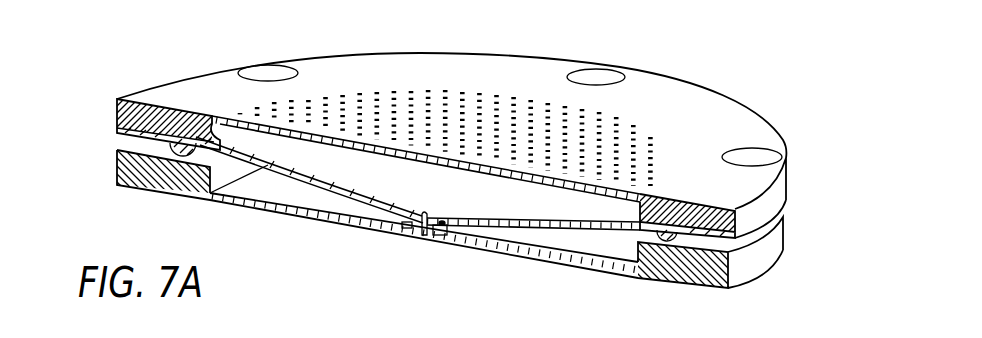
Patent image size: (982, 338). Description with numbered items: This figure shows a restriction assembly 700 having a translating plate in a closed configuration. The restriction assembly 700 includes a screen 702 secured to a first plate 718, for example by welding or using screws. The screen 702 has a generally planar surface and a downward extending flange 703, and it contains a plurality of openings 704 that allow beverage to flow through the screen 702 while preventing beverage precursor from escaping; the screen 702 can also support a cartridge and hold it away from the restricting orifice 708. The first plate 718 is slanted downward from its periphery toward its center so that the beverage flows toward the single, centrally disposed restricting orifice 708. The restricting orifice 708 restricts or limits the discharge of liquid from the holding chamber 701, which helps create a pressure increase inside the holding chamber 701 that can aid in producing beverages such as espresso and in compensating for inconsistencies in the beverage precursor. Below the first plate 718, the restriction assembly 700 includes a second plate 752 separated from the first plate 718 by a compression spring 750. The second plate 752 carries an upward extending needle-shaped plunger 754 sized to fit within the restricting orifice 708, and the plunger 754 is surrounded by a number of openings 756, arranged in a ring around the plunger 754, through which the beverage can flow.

The restriction assembly 700 is at (758, 87).
The holding chamber 701 is at (293, 162).
The screen 702 is at (683, 100).
The downward extending flange 703 is at (115, 118).
The openings 704 is at (657, 105).
The restricting orifice 708 is at (428, 213).
The first plate 718 is at (560, 207).
The compression spring 750 is at (673, 278).
The second plate 752 is at (333, 207).
The plunger 754 is at (422, 222).
The openings 756 is at (408, 232).